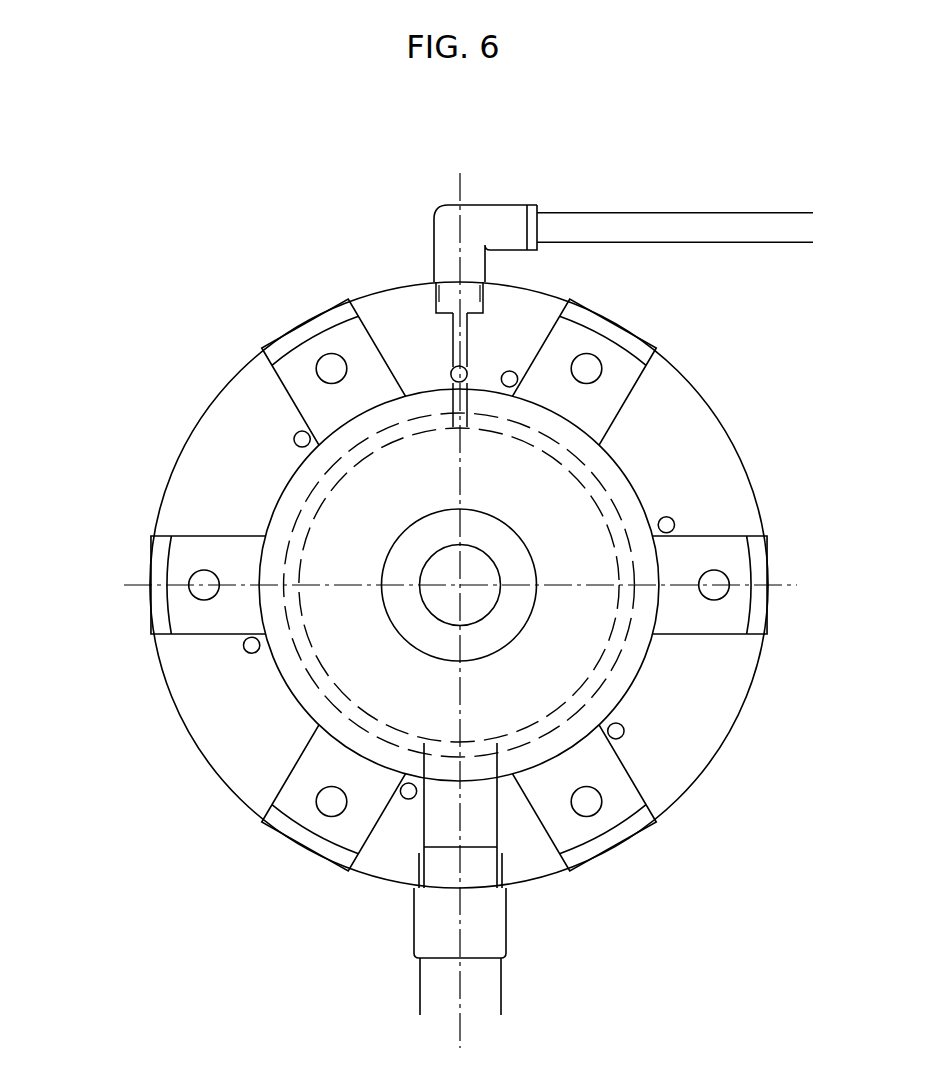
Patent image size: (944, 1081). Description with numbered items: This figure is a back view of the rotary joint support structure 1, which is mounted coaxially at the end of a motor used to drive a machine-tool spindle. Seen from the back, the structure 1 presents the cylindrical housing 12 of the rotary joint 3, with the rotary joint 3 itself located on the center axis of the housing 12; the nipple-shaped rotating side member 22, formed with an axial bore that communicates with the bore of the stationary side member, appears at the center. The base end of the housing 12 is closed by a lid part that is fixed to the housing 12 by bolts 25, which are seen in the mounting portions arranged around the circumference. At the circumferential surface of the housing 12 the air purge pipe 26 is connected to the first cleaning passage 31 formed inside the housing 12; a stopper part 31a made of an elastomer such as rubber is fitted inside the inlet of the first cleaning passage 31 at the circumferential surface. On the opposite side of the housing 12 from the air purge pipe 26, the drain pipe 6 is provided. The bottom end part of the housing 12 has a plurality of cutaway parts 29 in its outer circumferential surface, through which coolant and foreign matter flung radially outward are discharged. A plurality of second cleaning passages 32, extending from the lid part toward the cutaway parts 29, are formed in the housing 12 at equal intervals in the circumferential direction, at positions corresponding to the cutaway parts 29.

The rotary joint support structure 1 is at (736, 157).
The rotary joint 3 is at (536, 530).
The drain pipe 6 is at (478, 983).
The housing 12 is at (147, 362).
The rotating side member 22 is at (482, 600).
The bolt 25 is at (330, 813).
The air purge pipe 26 is at (447, 218).
The cutaway part 29 is at (177, 515).
The first cleaning passage 31 is at (452, 337).
The stopper part 31a is at (443, 298).
The second cleaning passage 32 is at (512, 370).